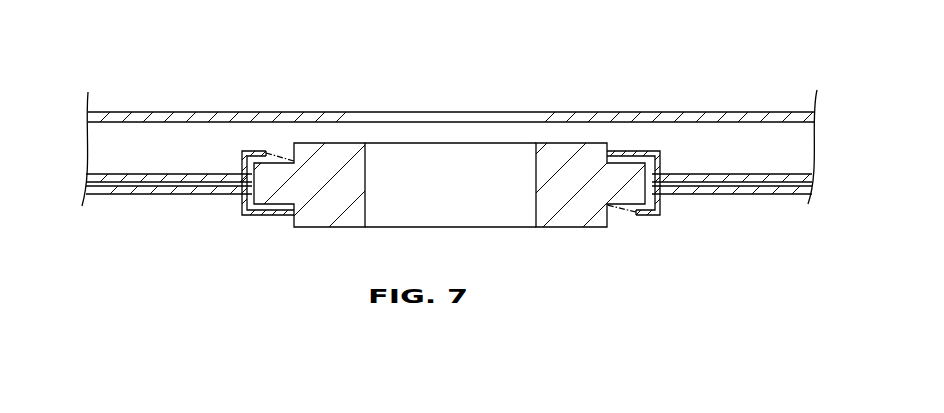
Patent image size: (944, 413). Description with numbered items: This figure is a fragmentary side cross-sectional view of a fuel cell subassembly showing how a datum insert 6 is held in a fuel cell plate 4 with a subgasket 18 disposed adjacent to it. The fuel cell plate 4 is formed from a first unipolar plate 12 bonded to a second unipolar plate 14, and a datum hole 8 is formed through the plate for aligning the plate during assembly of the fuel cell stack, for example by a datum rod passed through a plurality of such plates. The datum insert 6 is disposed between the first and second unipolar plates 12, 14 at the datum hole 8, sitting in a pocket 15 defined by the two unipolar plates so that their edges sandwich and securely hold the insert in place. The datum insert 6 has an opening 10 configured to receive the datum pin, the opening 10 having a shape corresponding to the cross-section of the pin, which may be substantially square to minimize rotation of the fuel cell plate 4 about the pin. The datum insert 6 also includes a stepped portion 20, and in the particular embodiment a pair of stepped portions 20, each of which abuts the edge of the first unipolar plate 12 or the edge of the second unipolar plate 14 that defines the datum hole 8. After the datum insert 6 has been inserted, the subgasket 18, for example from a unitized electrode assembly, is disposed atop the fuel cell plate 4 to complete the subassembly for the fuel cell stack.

The fuel cell plate 4 is at (85, 172).
The datum insert 6 is at (316, 229).
The datum hole 8 is at (450, 142).
The opening 10 is at (450, 190).
The first unipolar plate 12 is at (130, 173).
The second unipolar plate 14 is at (170, 196).
The pocket 15 is at (250, 160).
The subgasket 18 is at (178, 111).
The stepped portion 20 is at (293, 163).